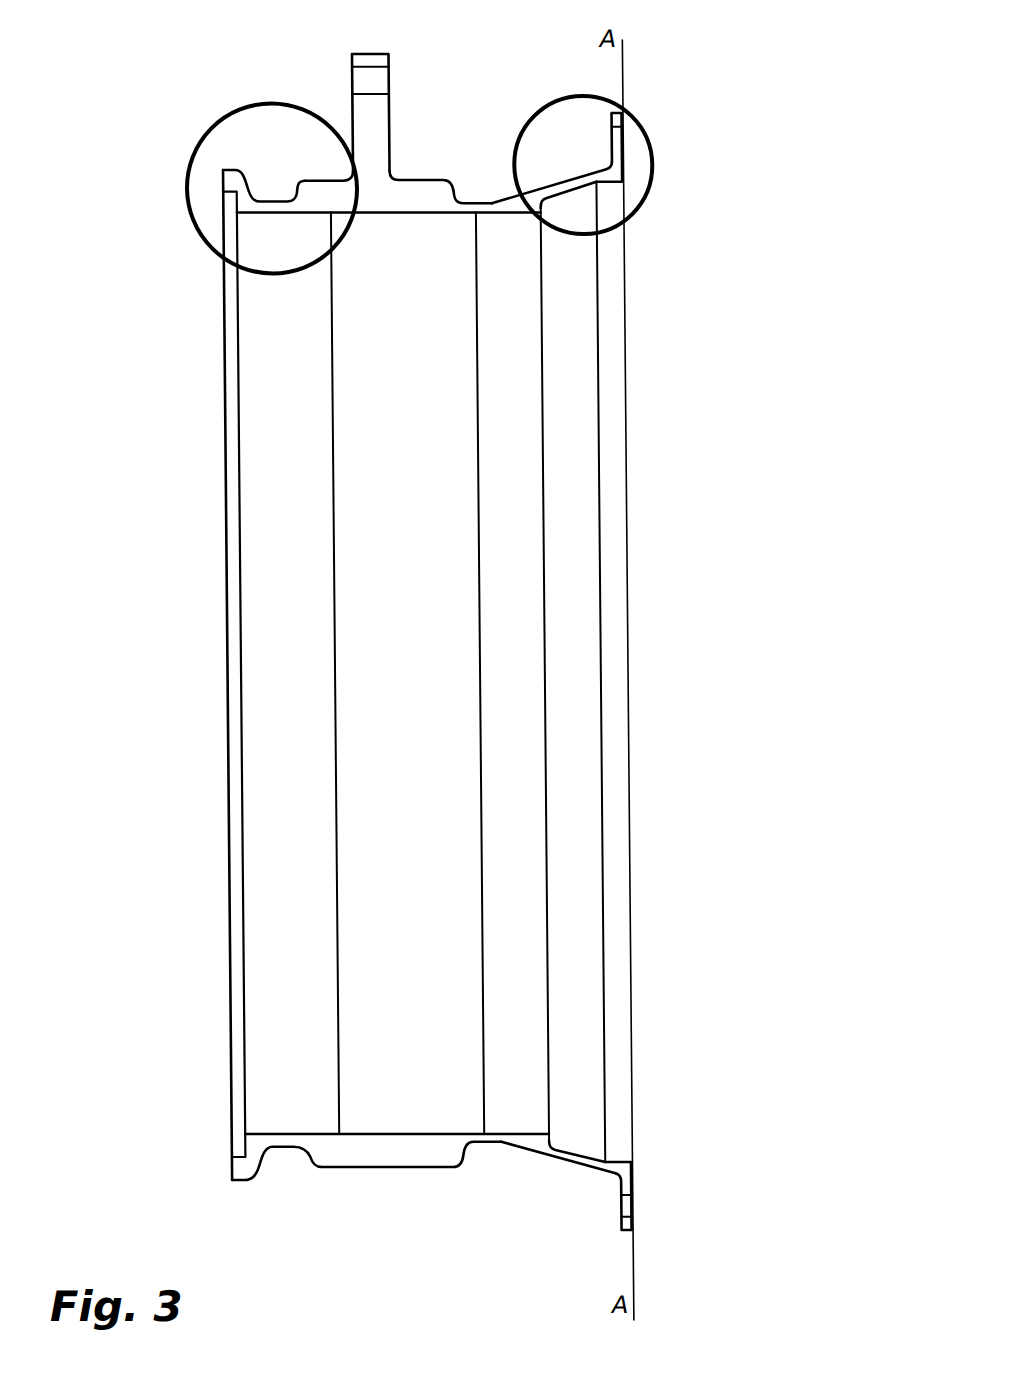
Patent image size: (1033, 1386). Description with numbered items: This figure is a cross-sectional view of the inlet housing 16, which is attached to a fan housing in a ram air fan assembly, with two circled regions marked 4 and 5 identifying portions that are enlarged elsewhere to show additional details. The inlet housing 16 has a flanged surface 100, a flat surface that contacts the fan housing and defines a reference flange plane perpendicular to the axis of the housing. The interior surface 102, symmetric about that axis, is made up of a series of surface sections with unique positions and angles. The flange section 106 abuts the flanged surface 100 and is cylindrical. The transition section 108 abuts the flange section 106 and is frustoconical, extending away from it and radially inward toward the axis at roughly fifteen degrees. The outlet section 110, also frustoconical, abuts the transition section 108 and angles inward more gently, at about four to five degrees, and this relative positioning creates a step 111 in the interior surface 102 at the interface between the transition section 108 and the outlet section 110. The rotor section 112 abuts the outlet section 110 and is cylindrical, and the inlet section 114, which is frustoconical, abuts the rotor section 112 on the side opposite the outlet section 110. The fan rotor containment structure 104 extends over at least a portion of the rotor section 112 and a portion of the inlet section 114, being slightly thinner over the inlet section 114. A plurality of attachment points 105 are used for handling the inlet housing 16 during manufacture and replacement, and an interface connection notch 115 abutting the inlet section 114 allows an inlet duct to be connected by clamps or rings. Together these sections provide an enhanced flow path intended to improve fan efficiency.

The inlet housing 16 is at (762, 62).
The detail view circle 4 is at (221, 117).
The detail view circle 5 is at (546, 108).
The flanged surface 100 is at (656, 671).
The interior surface 102 is at (427, 672).
The fan rotor containment structure 104 is at (409, 622).
The attachment points 105 is at (352, 108).
The flange section 106 is at (623, 200).
The transition section 108 is at (565, 184).
The outlet section 110 is at (501, 205).
The step 111 is at (541, 200).
The rotor section 112 is at (368, 214).
The inlet section 114 is at (268, 213).
The interface connection notch 115 is at (225, 200).